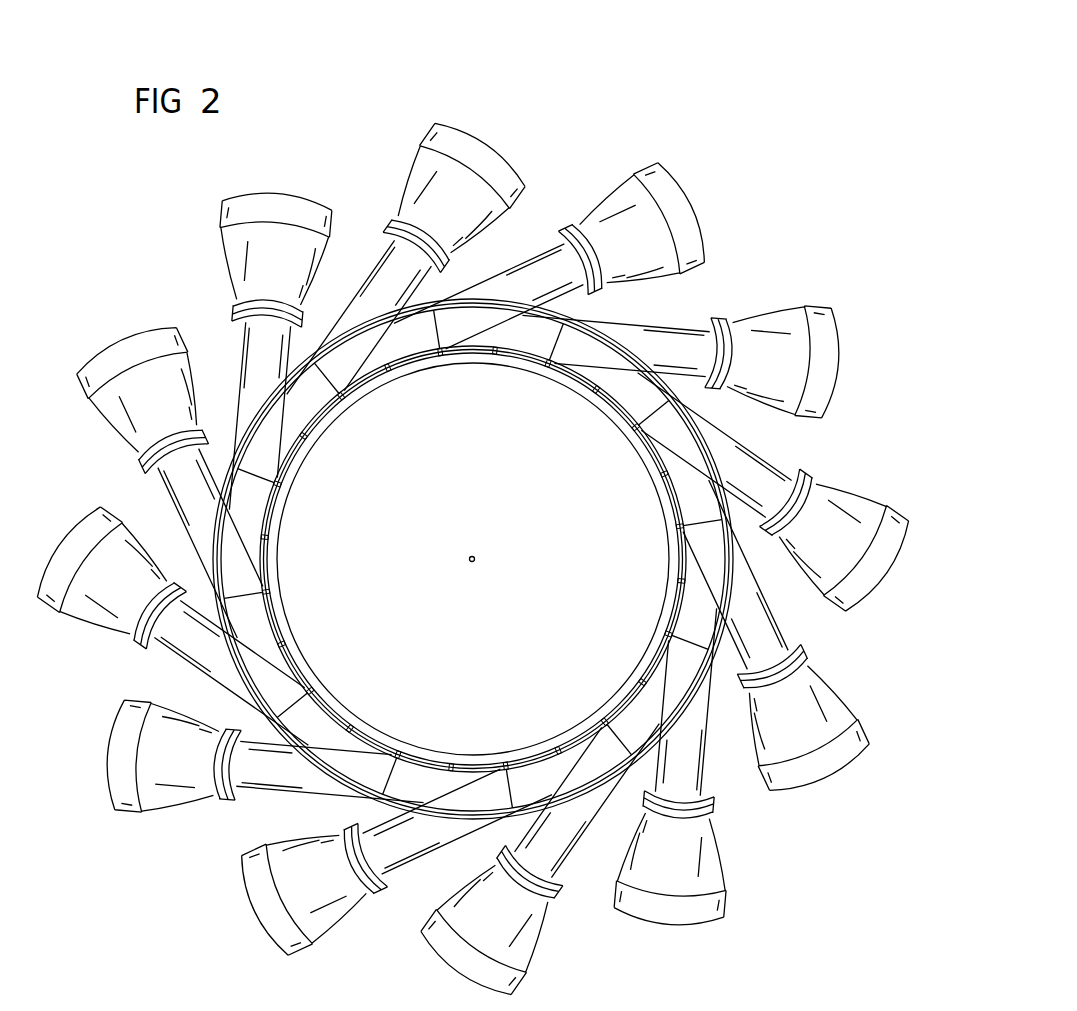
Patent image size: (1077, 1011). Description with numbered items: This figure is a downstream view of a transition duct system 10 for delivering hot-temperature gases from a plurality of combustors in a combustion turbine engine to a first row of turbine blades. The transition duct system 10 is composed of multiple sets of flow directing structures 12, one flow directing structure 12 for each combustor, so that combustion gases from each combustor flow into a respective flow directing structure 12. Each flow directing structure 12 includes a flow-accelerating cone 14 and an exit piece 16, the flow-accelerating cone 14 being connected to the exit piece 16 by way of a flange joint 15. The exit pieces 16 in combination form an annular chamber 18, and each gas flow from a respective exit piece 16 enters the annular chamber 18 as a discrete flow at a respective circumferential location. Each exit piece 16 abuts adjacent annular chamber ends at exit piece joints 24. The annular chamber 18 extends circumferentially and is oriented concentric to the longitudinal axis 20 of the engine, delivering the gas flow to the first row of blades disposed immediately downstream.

The transition duct system 10 is at (645, 51).
The flow directing structure 12 is at (604, 181).
The flow-accelerating cone 14 is at (430, 148).
The flange joint 15 is at (396, 200).
The exit piece 16 is at (382, 284).
The annular chamber 18 is at (418, 336).
The longitudinal axis 20 is at (474, 556).
The exit piece joint 24 is at (533, 352).